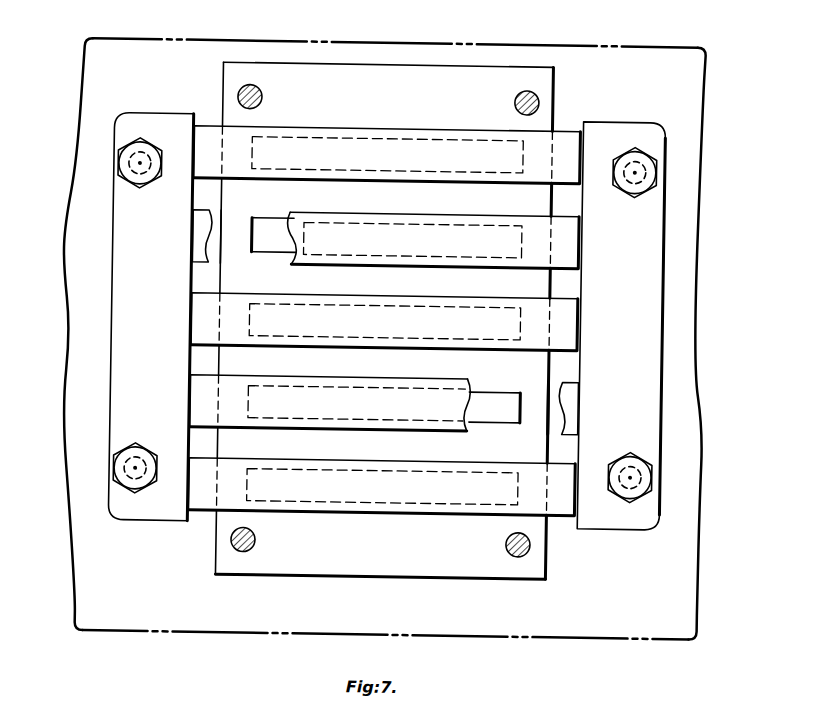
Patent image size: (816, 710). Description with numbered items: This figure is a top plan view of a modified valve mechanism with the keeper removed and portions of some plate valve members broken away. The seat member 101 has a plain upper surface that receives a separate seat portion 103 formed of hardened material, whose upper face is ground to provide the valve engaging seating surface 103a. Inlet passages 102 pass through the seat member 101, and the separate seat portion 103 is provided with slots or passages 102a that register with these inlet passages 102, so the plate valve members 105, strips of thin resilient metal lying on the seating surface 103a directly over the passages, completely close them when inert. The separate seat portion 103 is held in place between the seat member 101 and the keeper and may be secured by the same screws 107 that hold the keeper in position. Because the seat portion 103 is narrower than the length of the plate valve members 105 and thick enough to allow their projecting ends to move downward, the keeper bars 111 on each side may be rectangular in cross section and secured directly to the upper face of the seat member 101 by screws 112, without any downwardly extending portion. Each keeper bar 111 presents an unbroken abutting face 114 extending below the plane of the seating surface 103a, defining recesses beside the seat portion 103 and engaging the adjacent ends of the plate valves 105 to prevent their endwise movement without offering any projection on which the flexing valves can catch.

The seat member 101 is at (681, 76).
The inlet passages 102 is at (265, 222).
The slots or passages 102a is at (498, 418).
The separate seat portion 103 is at (537, 83).
The valve engaging seating surface 103a is at (238, 235).
The plate valve members 105 is at (205, 138).
The screws 107 is at (246, 87).
The keeper bars 111 is at (124, 129).
The screws 112 is at (115, 164).
The unbroken abutting face 114 is at (185, 243).